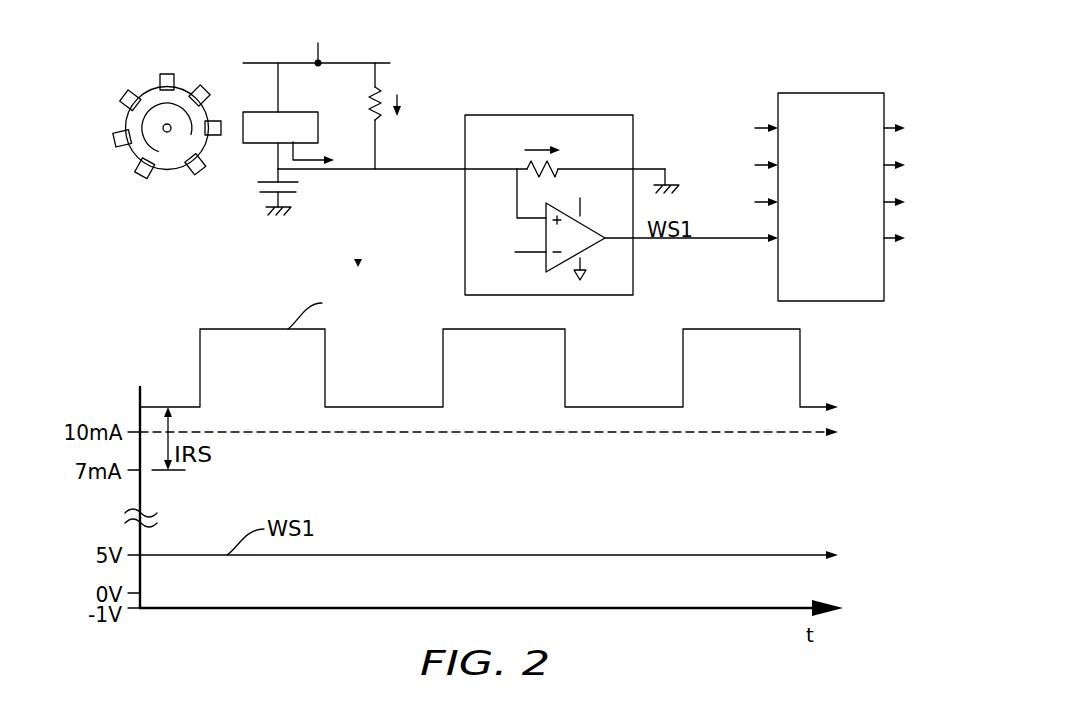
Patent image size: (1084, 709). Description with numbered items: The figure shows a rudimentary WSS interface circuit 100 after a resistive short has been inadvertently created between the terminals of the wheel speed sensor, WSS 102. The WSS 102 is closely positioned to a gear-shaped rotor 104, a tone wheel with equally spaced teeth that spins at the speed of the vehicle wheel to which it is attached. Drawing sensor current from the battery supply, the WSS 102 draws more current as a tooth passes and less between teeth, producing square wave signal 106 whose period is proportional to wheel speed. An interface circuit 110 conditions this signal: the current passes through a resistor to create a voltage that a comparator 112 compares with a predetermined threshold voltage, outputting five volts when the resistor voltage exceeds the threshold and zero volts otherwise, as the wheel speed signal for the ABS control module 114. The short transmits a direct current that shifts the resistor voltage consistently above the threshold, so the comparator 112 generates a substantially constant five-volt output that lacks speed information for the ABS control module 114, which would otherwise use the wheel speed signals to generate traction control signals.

The WSS interface circuit 100 is at (501, 43).
The WSS 102 is at (265, 112).
The gear-shaped rotor 104 is at (184, 84).
The square wave signal 106 is at (250, 329).
The interface circuit 110 is at (549, 184).
The comparator 112 is at (600, 232).
The ABS control module 114 is at (807, 93).